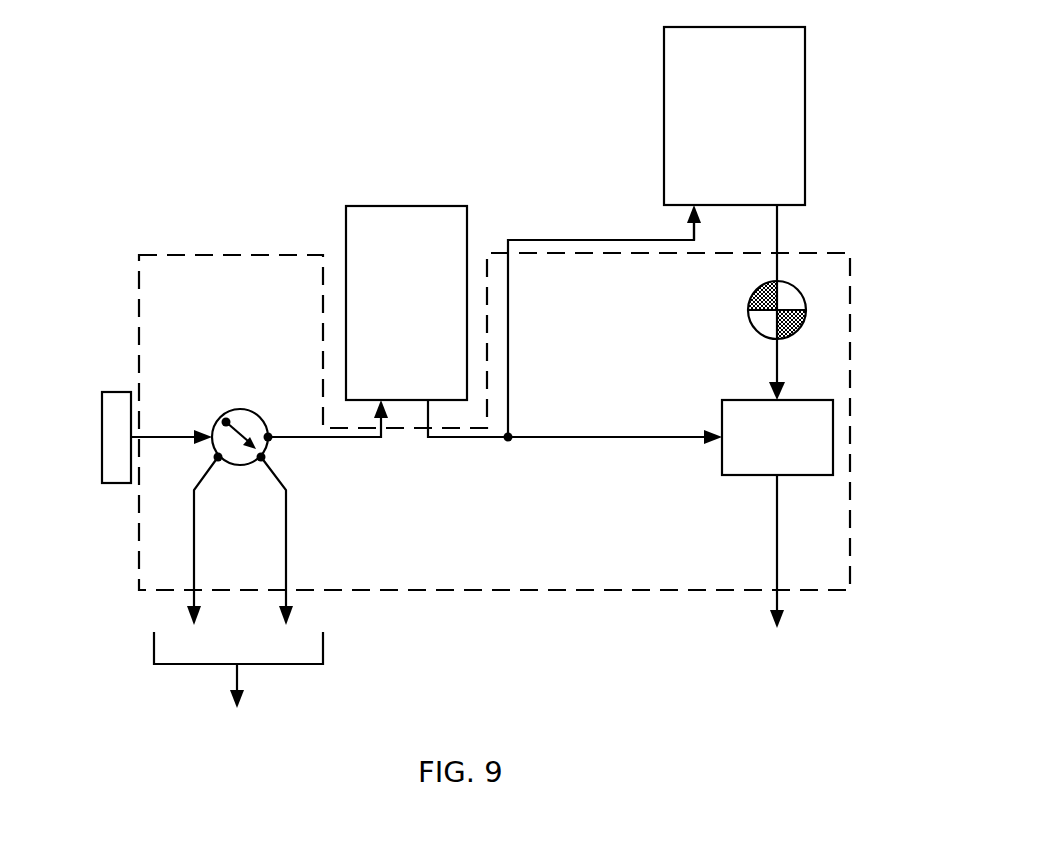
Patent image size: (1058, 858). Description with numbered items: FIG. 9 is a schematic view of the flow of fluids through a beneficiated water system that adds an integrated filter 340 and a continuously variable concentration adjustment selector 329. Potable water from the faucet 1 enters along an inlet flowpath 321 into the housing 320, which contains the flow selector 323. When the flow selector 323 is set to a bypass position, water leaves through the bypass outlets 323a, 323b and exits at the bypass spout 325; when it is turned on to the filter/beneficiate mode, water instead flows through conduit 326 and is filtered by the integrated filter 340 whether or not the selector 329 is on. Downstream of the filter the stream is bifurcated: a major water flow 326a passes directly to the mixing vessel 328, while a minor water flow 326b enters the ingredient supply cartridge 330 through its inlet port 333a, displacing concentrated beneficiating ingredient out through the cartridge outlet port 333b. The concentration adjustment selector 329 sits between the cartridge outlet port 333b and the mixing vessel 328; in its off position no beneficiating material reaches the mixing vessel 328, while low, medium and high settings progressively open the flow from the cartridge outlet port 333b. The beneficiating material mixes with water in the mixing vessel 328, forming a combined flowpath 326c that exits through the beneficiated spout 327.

The faucet 1 is at (102, 401).
The analysis unit 320 is at (524, 592).
The inlet line 321 is at (167, 436).
The flow selector 323 is at (232, 398).
The first outlet 323a is at (156, 602).
The second outlet 323b is at (322, 602).
The drain 325 is at (282, 686).
The conduit 326 is at (352, 440).
The conduit branch a 326a is at (590, 458).
The conduit branch b 326b is at (614, 226).
The conduit branch c 326c is at (777, 512).
The outlet 327 is at (752, 604).
The mixing vessel 328 is at (722, 420).
The concentration adjustment selector 329 is at (750, 328).
The ingredient supply cartridge 330 is at (680, 72).
The reservoir inlet 333a is at (698, 230).
The cartridge outlet port 333b is at (777, 240).
The integrated filter 340 is at (398, 206).